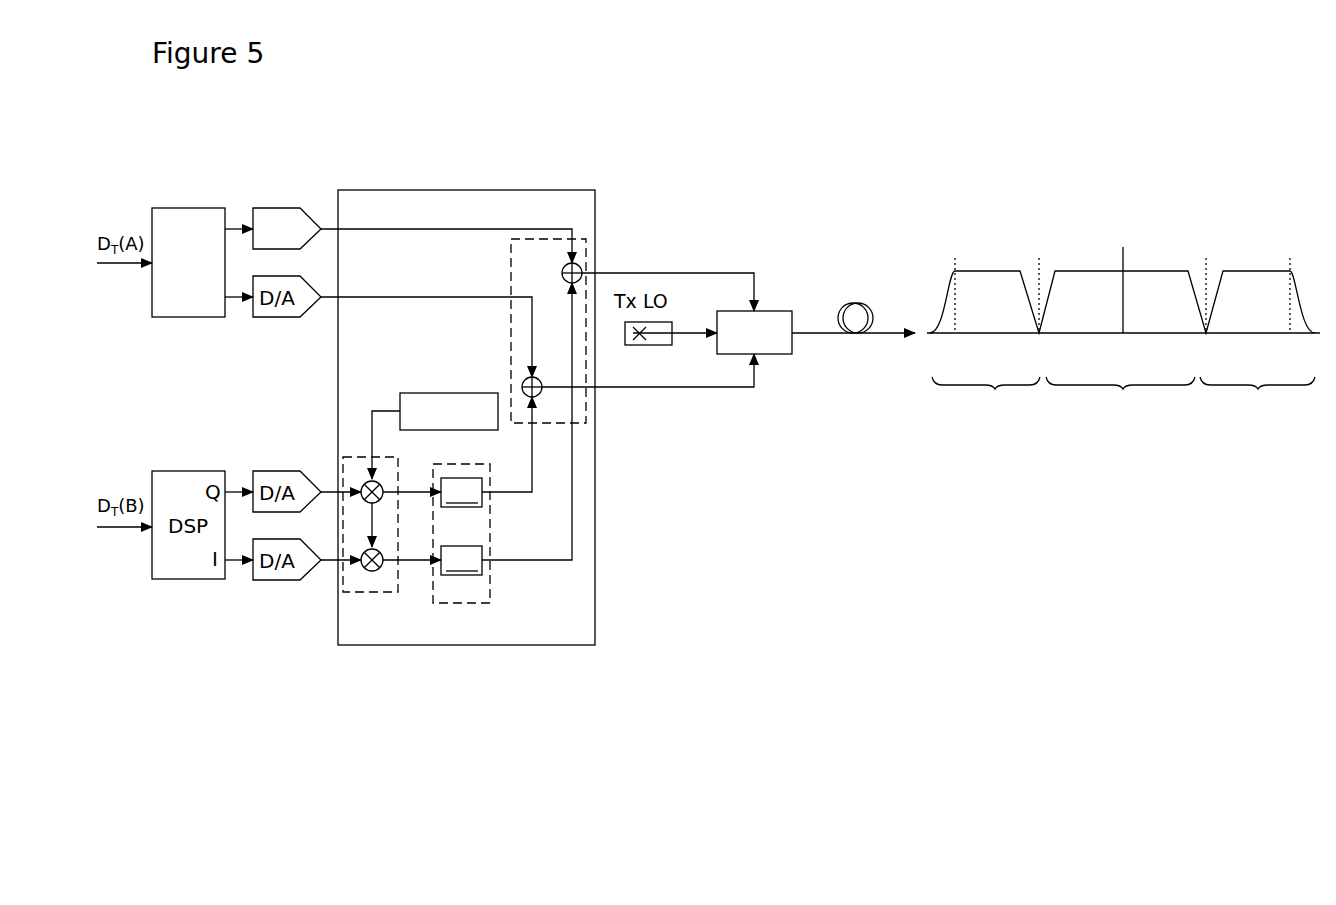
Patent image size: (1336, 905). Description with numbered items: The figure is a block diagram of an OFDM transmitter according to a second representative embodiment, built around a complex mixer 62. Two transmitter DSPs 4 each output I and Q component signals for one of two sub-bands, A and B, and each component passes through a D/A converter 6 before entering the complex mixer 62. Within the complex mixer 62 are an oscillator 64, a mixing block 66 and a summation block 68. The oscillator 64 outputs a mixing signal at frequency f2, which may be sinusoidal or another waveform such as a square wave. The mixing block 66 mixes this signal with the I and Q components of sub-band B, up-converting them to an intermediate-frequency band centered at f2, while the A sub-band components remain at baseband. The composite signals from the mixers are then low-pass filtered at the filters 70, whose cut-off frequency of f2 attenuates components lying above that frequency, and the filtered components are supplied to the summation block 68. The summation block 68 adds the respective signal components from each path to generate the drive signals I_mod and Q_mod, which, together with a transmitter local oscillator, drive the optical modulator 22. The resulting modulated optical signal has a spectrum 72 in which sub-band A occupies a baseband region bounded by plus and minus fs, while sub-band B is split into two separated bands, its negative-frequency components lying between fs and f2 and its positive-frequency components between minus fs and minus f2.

The transmitter DSP 4 is at (188, 208).
The D/A converter 6 is at (273, 208).
The optical modulator 22 is at (780, 311).
The complex mixer 62 is at (537, 190).
The oscillator 64 is at (447, 393).
The mixing block 66 is at (375, 592).
The summation block 68 is at (511, 262).
The low-pass filters 70 is at (490, 587).
The spectrum 72 is at (1167, 246).